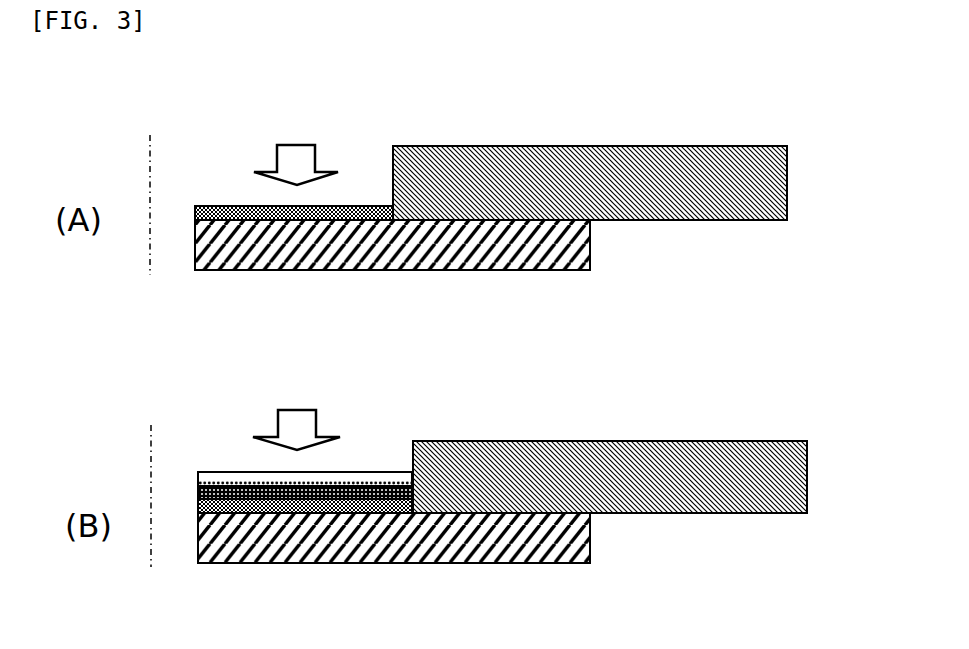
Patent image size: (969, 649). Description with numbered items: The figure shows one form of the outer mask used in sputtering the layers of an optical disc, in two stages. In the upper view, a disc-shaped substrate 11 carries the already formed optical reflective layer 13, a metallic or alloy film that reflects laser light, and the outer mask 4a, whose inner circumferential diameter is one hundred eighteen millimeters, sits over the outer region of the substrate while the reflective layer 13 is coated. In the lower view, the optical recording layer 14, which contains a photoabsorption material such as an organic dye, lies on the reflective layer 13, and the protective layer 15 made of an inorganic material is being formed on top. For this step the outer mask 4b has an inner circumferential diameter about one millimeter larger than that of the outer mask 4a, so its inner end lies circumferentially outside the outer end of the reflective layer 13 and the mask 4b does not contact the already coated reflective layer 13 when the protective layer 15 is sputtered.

The substrate 11 is at (242, 252).
The optical reflective layer 13 is at (328, 221).
The optical recording layer 14 is at (323, 493).
The protective layer 15 is at (380, 478).
The outer mask 4a is at (717, 208).
The outer mask 4b is at (722, 487).